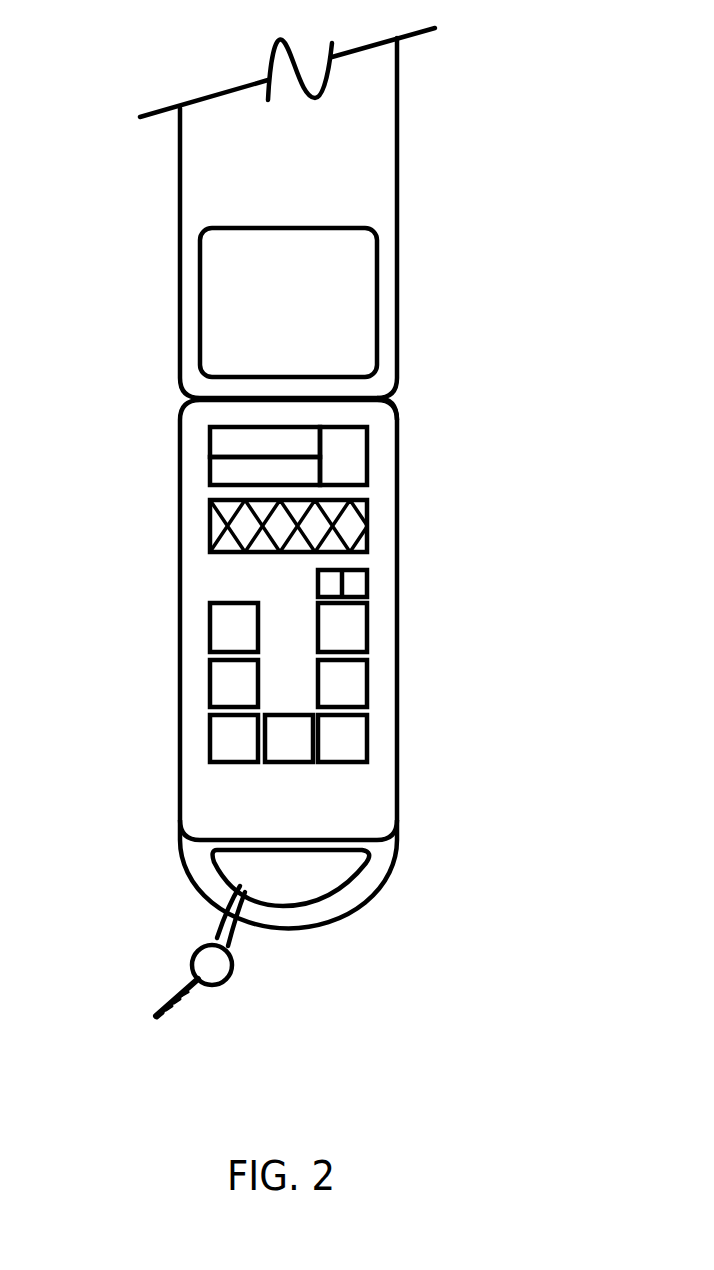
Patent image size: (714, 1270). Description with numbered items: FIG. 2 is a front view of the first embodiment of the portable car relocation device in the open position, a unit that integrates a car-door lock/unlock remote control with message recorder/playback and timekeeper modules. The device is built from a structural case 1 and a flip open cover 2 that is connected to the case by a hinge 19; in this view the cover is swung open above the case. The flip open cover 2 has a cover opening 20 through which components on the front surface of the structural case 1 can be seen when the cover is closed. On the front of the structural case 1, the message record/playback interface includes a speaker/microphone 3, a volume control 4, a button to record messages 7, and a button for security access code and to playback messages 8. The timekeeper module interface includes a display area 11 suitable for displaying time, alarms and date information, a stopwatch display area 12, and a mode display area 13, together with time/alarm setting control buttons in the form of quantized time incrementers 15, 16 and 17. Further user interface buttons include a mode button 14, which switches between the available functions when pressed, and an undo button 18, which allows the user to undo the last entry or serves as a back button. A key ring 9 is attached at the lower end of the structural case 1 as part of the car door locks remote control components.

The structural case 1 is at (197, 417).
The flip open cover 2 is at (240, 175).
The speaker/microphone 3 is at (240, 537).
The volume control 4 is at (367, 577).
The button to record messages 7 is at (240, 618).
The button for security access code and to playback messages 8 is at (342, 617).
The key ring 9 is at (220, 917).
The display area 11 is at (240, 437).
The stopwatch display area 12 is at (240, 477).
The mode display area 13 is at (342, 457).
The mode button 14 is at (240, 678).
The quantized time incrementer 15 is at (240, 738).
The quantized time incrementer 16 is at (282, 740).
The quantized time incrementer 17 is at (342, 740).
The undo button 18 is at (342, 678).
The hinge 19 is at (399, 393).
The cover opening 20 is at (340, 295).